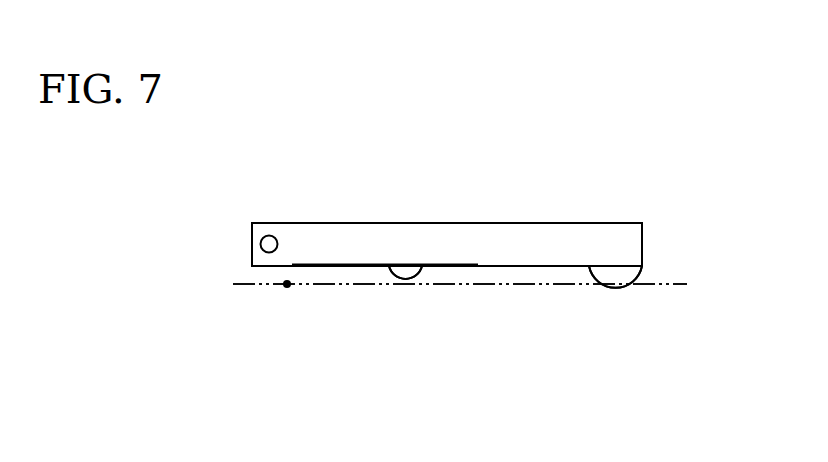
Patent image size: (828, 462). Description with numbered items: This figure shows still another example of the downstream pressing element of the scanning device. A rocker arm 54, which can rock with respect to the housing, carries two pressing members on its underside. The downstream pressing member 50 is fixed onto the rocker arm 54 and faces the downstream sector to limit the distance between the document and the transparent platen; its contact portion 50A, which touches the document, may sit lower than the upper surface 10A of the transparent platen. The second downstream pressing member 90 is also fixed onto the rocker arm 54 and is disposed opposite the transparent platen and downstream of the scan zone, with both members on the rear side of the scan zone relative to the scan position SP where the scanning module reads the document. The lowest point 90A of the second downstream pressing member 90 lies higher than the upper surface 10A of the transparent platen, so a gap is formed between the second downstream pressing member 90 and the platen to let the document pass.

The rocker arm 54 is at (399, 238).
The second downstream pressing member 90 is at (404, 278).
The lowest point 90A is at (406, 278).
The downstream pressing member 50 is at (610, 284).
The contact portion 50A is at (612, 286).
The upper surface 10A is at (490, 286).
The scan position SP is at (284, 287).